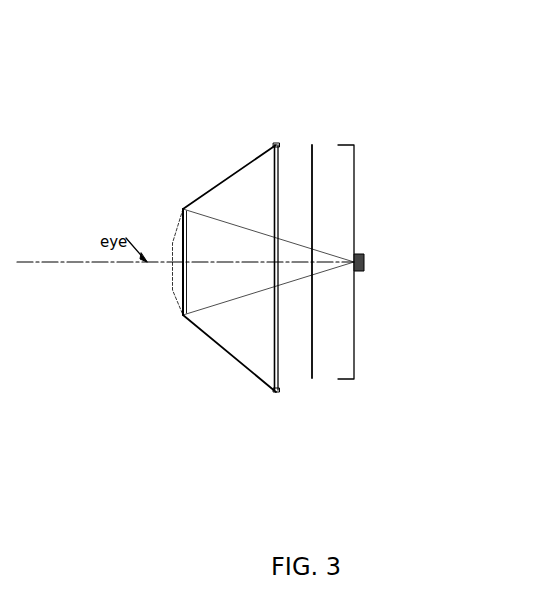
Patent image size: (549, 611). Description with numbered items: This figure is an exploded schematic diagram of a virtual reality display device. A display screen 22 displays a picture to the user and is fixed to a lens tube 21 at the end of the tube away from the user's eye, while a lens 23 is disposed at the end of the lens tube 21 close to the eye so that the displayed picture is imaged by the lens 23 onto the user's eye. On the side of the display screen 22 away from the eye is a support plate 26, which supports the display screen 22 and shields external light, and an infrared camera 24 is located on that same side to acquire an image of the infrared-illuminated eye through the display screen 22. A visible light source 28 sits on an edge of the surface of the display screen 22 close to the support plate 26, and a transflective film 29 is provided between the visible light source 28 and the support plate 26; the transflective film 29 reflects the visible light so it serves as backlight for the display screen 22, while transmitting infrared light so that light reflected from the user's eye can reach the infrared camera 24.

The lens tube 21 is at (203, 195).
The display screen 22 is at (276, 218).
The lens 23 is at (178, 268).
The infrared camera 24 is at (364, 266).
The support plate 26 is at (354, 188).
The visible light source 28 is at (275, 144).
The transflective film 29 is at (312, 282).